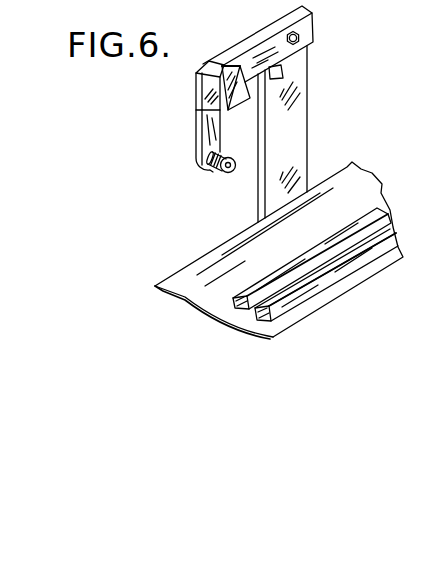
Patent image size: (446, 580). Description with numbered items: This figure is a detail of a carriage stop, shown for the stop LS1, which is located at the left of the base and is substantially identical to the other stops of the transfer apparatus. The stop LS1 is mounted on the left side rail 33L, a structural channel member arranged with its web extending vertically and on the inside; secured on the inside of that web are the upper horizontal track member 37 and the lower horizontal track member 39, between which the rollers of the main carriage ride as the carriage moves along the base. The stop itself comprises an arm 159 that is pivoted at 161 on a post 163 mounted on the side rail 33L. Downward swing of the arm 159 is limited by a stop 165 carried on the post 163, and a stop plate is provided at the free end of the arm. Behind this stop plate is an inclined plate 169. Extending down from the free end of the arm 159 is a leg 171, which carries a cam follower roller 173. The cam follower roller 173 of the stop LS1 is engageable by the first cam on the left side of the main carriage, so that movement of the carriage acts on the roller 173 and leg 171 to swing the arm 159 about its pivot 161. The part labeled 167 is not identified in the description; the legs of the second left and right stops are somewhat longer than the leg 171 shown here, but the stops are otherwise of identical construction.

The left side rail 33L is at (232, 241).
The upper horizontal track member 37 is at (315, 255).
The lower horizontal track member 39 is at (313, 279).
The arm 159 is at (243, 48).
The pivot 161 is at (299, 36).
The post 163 is at (308, 123).
The stop 165 is at (284, 70).
The mounting block 167 is at (212, 95).
The inclined plate 169 is at (234, 98).
The leg 171 is at (197, 138).
The cam follower roller 173 is at (221, 173).
The stop LS1 is at (190, 130).